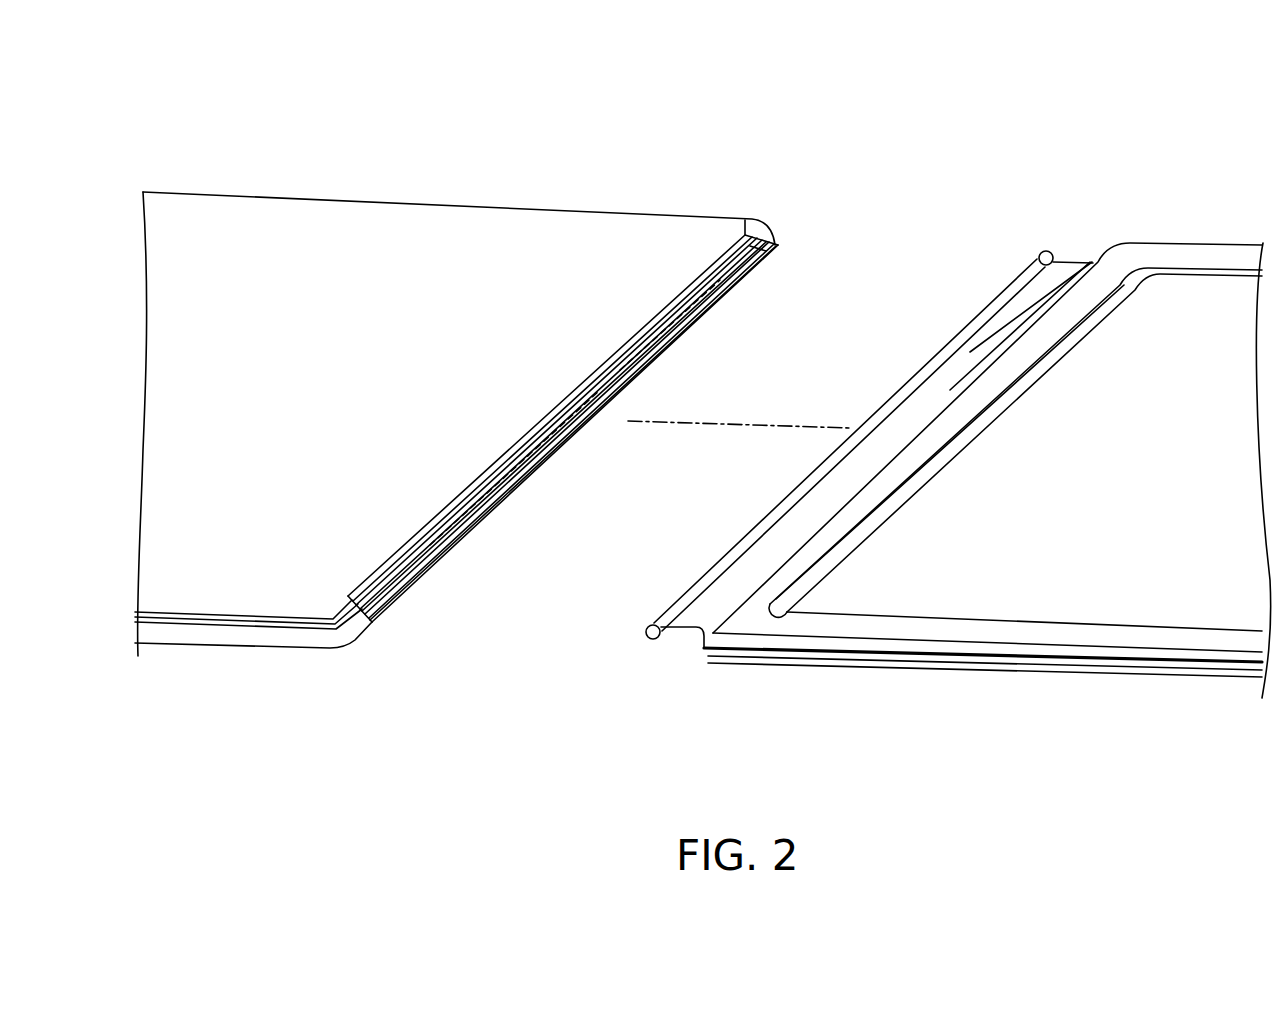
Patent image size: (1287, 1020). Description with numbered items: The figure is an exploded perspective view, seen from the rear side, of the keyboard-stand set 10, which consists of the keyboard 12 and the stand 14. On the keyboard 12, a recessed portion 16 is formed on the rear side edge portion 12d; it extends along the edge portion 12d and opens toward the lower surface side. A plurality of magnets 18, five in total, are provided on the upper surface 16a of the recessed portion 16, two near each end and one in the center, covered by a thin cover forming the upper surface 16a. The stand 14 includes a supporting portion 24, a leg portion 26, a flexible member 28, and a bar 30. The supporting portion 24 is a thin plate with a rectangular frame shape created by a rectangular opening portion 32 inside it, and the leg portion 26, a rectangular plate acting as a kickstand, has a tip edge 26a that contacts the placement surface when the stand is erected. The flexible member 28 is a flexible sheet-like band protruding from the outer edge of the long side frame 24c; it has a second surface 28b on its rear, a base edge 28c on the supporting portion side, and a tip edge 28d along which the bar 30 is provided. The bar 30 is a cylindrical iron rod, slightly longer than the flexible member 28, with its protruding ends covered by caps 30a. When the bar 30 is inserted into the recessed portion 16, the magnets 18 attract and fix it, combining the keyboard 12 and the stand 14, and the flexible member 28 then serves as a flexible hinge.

The keyboard-stand set 10 is at (1210, 76).
The keyboard 12 is at (745, 150).
The rear side edge portion 12d is at (580, 435).
The stand 14 is at (1030, 178).
The recessed portion 16 is at (497, 518).
The upper surface 16a is at (545, 470).
The magnet 18 is at (742, 278).
The supporting portion 24 is at (985, 490).
The long side frame 24c is at (888, 484).
The leg portion 26 is at (987, 513).
The tip edge 26a is at (805, 565).
The flexible member 28 is at (995, 331).
The second surface 28b is at (978, 352).
The base edge 28c is at (957, 385).
The tip edge 28d is at (892, 405).
The bar 30 is at (863, 458).
The cap 30a is at (1052, 250).
The opening portion 32 is at (1100, 600).